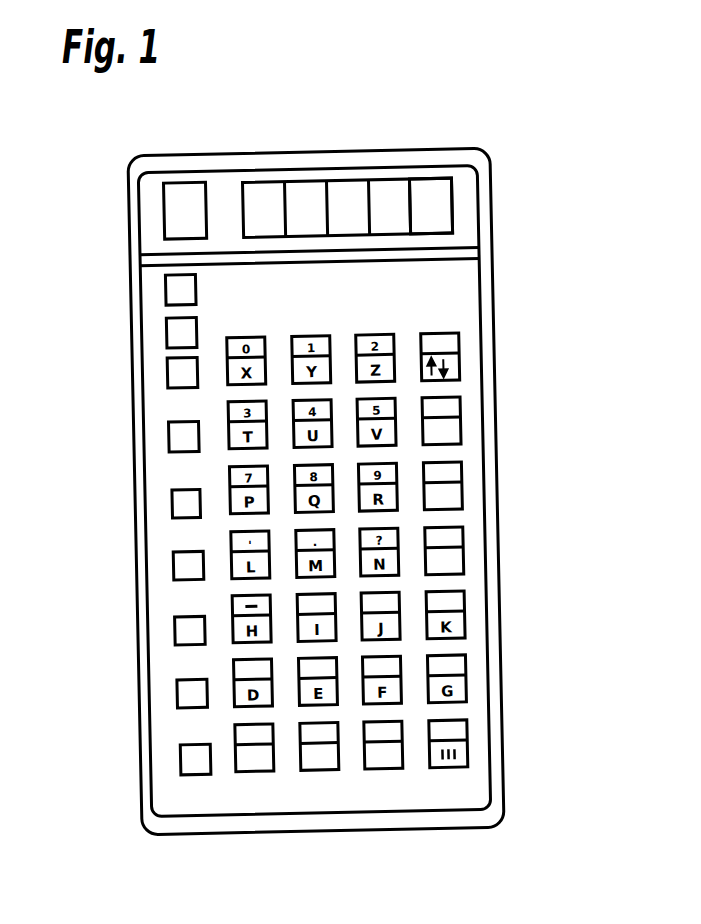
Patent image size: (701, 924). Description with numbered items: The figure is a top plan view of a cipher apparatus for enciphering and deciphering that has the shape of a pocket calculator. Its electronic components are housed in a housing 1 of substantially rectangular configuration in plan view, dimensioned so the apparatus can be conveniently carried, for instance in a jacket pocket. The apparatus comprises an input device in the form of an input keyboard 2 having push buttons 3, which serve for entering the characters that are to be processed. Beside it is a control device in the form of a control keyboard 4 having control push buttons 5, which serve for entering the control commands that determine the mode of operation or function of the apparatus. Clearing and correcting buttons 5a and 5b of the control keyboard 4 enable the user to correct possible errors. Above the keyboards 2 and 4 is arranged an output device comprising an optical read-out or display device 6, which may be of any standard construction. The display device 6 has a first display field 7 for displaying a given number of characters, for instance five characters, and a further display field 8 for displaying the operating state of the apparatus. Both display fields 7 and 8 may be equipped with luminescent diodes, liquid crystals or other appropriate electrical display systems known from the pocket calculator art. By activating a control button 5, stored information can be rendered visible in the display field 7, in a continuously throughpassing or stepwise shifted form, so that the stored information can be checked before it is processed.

The housing 1 is at (502, 697).
The input keyboard 2 is at (442, 578).
The push buttons 3 is at (453, 362).
The control keyboard 4 is at (190, 592).
The control push buttons 5 is at (186, 435).
The clearing button 5a is at (185, 289).
The correcting button 5b is at (186, 332).
The display device 6 is at (303, 180).
The first display field 7 is at (433, 178).
The further display field 8 is at (163, 208).